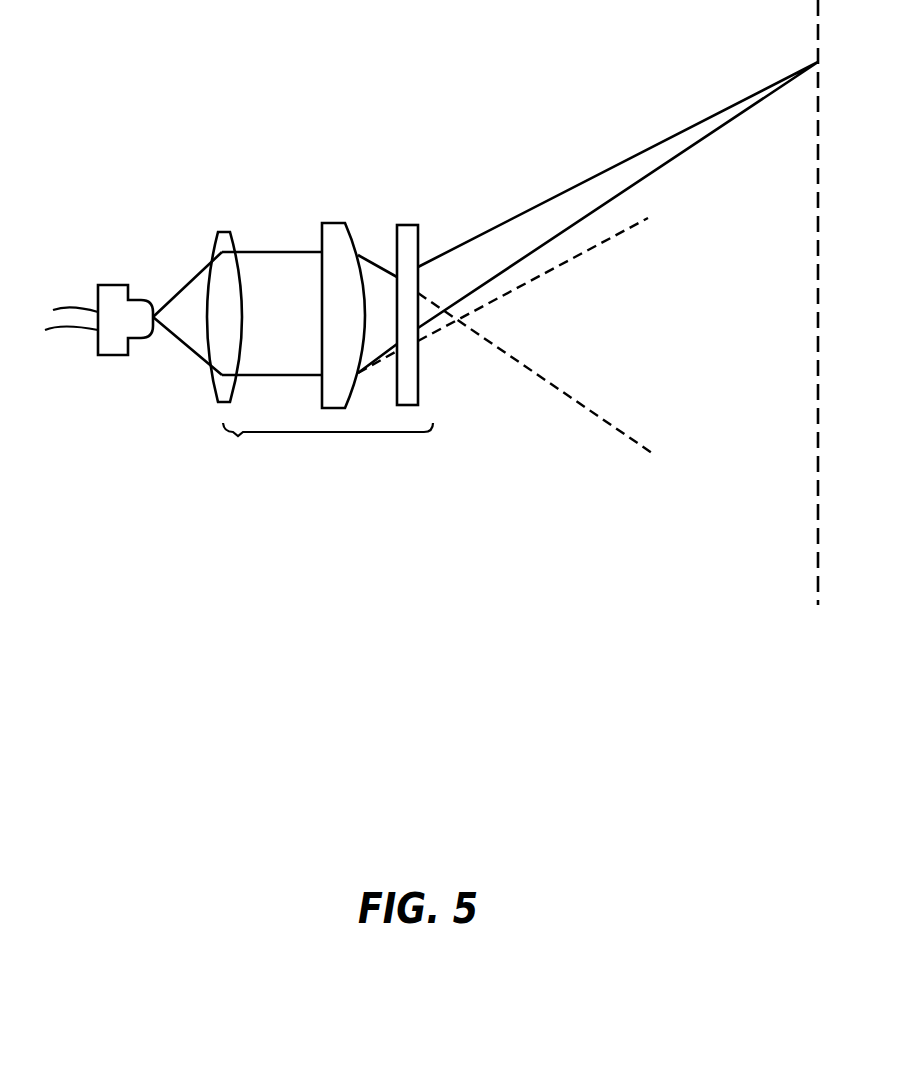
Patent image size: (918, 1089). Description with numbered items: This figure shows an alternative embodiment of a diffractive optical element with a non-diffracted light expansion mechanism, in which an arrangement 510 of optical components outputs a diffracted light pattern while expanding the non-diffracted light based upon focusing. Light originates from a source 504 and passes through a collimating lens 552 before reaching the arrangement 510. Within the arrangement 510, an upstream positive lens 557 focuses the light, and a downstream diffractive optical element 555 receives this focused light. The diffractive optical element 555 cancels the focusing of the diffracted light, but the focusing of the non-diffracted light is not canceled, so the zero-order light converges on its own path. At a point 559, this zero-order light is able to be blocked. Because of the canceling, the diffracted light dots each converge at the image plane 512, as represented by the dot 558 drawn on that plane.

The light source 504 is at (120, 342).
The collimating lens 552 is at (225, 252).
The upstream positive lens 557 is at (333, 235).
The downstream diffractive optical element 555 is at (406, 230).
The arrangement 510 is at (328, 448).
The dot 558 is at (818, 62).
The point 559 is at (458, 318).
The image plane 512 is at (818, 530).